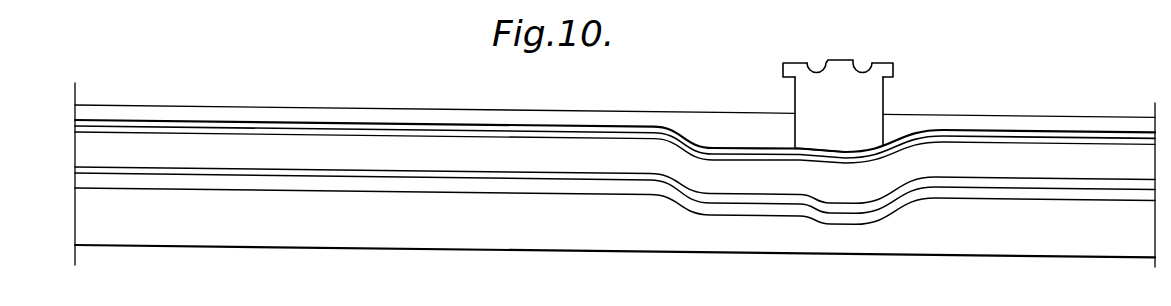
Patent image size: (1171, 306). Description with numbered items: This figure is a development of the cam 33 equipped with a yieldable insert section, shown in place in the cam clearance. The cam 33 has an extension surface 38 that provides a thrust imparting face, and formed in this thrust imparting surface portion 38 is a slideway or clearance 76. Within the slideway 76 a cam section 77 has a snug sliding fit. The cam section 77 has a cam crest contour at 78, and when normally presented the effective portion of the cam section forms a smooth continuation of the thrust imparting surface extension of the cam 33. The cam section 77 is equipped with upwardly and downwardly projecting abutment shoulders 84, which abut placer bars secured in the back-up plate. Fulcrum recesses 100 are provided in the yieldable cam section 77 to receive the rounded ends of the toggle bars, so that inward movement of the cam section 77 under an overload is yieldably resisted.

The extension surface 38 is at (383, 97).
The cam 33 is at (706, 123).
The fulcrum recesses 100 is at (852, 88).
The abutment shoulders 84 is at (790, 72).
The cam section 77 is at (856, 85).
The slideway or clearance 76 is at (888, 127).
The cam crest contour 78 is at (848, 150).